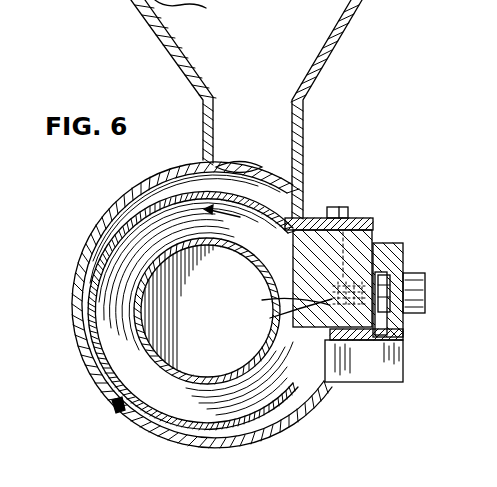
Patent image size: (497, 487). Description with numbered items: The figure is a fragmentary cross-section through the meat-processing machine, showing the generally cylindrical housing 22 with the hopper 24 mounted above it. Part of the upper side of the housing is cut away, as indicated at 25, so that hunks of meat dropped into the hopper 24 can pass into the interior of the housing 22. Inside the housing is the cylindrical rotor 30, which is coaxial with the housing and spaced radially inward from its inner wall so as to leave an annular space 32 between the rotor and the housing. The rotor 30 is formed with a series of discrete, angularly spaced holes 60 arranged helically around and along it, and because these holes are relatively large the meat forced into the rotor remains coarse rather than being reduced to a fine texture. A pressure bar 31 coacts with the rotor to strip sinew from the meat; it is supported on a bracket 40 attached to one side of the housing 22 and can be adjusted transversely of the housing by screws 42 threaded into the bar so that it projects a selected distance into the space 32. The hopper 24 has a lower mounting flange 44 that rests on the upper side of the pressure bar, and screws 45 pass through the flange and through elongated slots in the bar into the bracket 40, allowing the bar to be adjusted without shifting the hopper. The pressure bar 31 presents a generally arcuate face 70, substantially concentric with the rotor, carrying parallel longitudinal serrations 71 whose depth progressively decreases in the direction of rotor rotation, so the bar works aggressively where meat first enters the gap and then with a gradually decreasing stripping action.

The housing 22 is at (80, 258).
The hopper 24 is at (335, 52).
The cut away 25 is at (248, 157).
The rotor 30 is at (117, 403).
The pressure bar 31 is at (358, 259).
The annular space 32 is at (278, 398).
The bracket 40 is at (358, 342).
The screws 42 is at (416, 302).
The mounting flange 44 is at (363, 219).
The screws 45 is at (335, 207).
The holes 60 is at (222, 199).
The arcuate face 70 is at (328, 313).
The serrations 71 is at (328, 288).